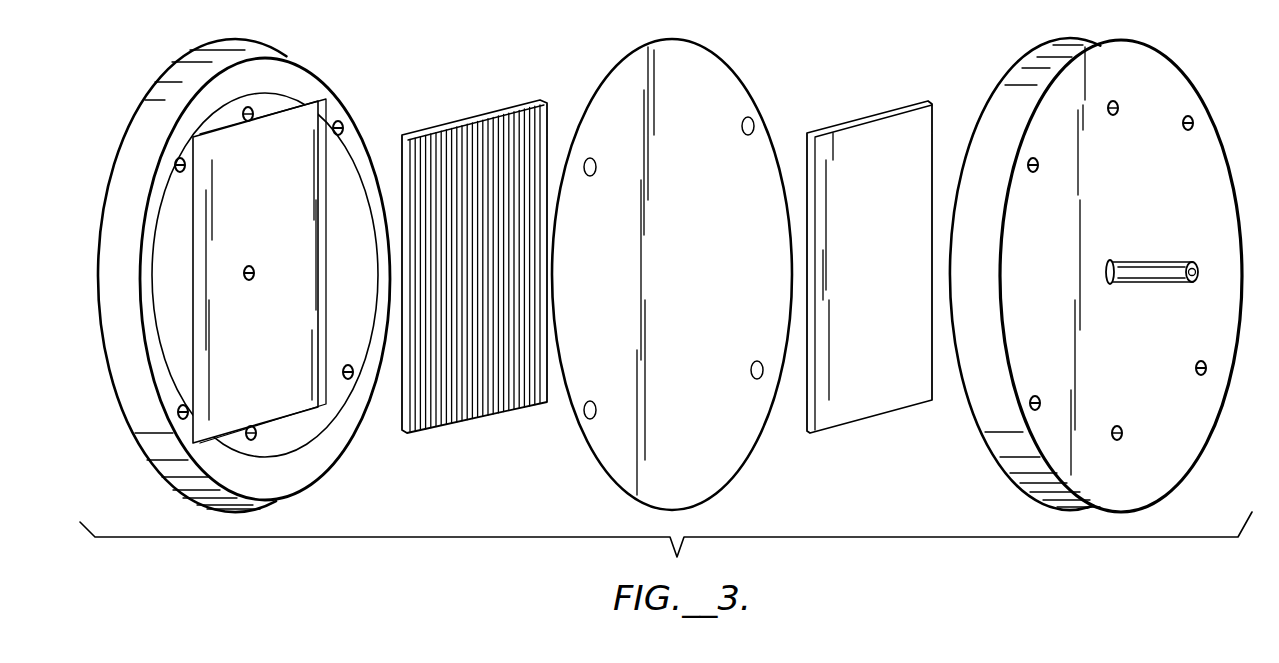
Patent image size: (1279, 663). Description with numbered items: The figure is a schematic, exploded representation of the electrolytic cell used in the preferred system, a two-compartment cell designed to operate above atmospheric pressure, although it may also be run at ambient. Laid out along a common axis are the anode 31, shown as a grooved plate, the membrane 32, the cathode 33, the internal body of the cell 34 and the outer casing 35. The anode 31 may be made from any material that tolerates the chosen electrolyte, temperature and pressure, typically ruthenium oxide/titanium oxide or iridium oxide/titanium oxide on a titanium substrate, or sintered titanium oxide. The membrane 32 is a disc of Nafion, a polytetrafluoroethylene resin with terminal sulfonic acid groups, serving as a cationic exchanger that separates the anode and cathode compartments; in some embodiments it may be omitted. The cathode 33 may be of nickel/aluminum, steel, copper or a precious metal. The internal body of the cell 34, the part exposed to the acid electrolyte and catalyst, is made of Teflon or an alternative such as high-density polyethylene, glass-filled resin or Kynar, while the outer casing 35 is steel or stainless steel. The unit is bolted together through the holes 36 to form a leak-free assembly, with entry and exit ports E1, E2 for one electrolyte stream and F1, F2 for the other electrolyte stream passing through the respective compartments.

The anode 31 is at (428, 434).
The membrane 32 is at (607, 471).
The cathode 33 is at (850, 434).
The internal body of the cell 34 is at (170, 200).
The outer casing 35 is at (1185, 160).
The holes 36 is at (1193, 121).
The electrolyte stream entry/exit port E1 is at (257, 438).
The electrolyte stream entry/exit port E2 is at (256, 110).
The electrolyte stream entry/exit port F1 is at (1118, 105).
The electrolyte stream entry/exit port F2 is at (1124, 433).